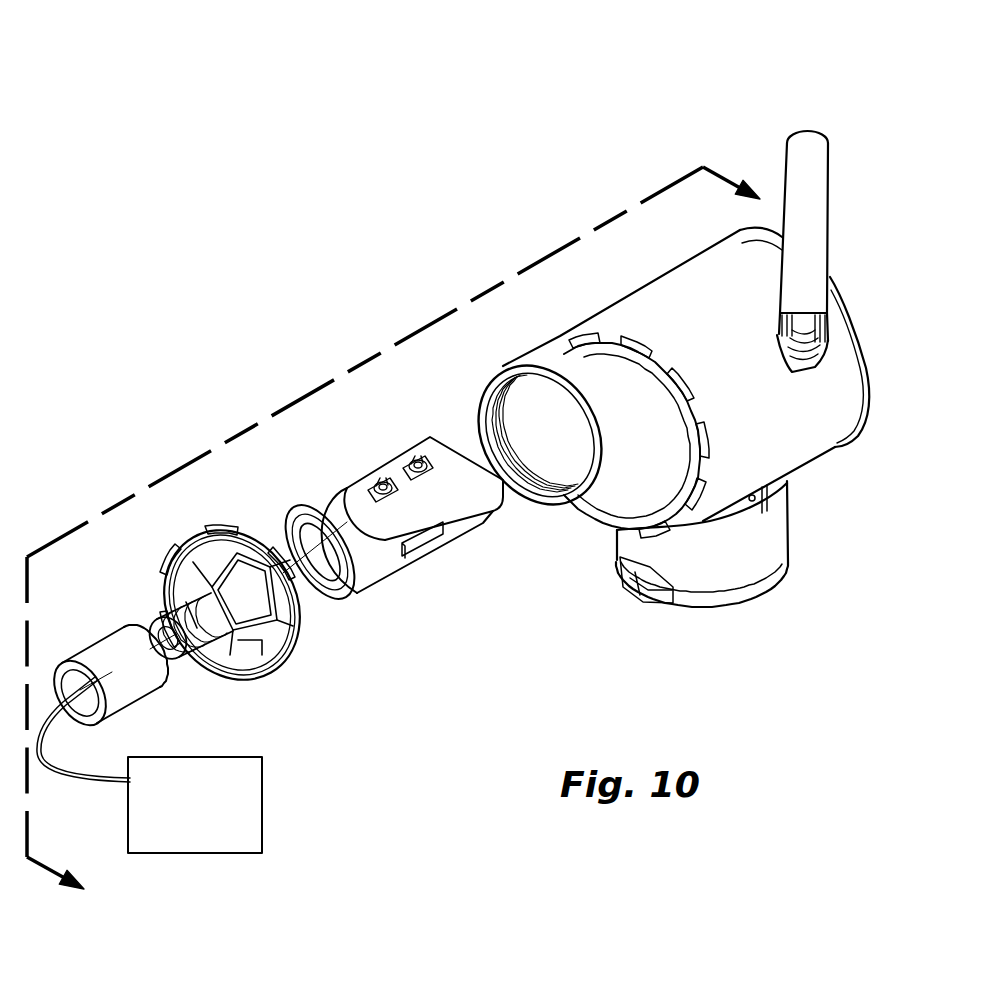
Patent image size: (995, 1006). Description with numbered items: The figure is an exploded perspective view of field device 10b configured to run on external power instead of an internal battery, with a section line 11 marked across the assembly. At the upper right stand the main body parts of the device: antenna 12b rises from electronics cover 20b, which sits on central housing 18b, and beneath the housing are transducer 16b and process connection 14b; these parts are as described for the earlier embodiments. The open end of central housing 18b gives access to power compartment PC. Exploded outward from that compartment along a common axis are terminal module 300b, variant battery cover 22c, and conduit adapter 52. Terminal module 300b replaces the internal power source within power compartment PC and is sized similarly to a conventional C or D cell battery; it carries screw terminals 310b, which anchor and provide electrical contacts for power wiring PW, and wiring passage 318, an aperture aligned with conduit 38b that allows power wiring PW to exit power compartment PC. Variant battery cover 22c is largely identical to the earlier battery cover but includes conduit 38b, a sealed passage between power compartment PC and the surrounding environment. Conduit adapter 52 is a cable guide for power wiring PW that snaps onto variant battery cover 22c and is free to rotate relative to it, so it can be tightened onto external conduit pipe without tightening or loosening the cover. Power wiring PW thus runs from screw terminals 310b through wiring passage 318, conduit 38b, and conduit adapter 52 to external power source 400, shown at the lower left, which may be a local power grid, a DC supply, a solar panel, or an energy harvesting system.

The field device 10b is at (460, 209).
The section line 11- 11 is at (393, 519).
The antenna 12b is at (810, 175).
The electronics cover 20b is at (850, 323).
The central housing 18b is at (813, 440).
The power compartment PC is at (545, 472).
The transducer 16b is at (716, 567).
The process connection 14b is at (733, 595).
The terminal module 300b is at (384, 576).
The screw terminals 310b is at (378, 484).
The wiring passage 318 is at (320, 537).
The variant battery cover 22c is at (250, 677).
The conduit 38b is at (173, 658).
The conduit adapter 52 is at (100, 650).
The power wiring PW is at (83, 729).
The external power source 400 is at (263, 802).